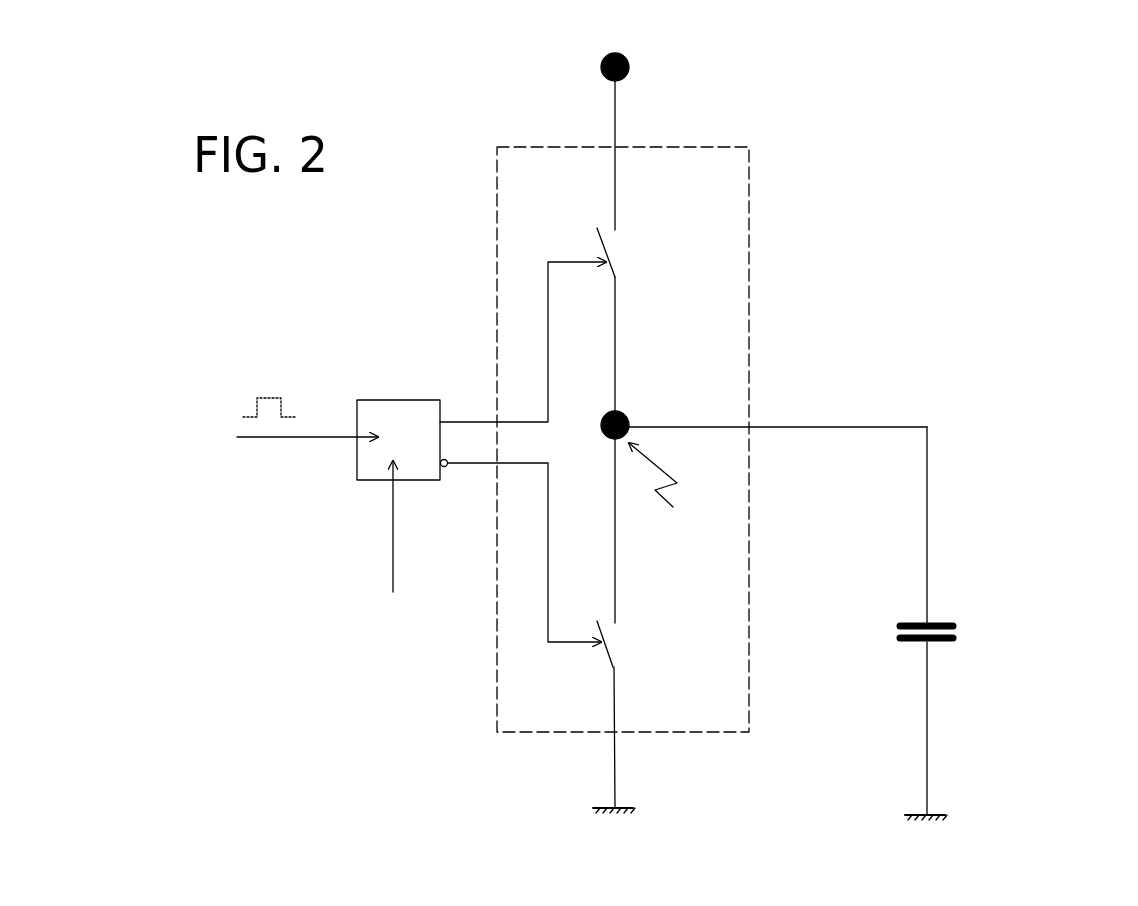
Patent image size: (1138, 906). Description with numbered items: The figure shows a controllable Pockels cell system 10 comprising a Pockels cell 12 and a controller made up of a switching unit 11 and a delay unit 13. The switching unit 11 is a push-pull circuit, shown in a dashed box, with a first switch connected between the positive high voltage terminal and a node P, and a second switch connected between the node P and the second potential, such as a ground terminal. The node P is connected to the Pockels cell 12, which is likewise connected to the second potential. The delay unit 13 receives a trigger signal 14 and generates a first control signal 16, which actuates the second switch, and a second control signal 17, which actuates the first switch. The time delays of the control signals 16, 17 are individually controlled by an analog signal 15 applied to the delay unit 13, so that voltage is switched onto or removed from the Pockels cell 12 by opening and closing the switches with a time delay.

The Pockels cell system 10 is at (1018, 160).
The switching unit 11 is at (718, 323).
The Pockels cell 12 is at (955, 614).
The delay unit 13 is at (396, 411).
The trigger signal 14 is at (288, 425).
The analog signal 15 is at (391, 549).
The first control signal 16 is at (521, 574).
The second control signal 17 is at (523, 325).